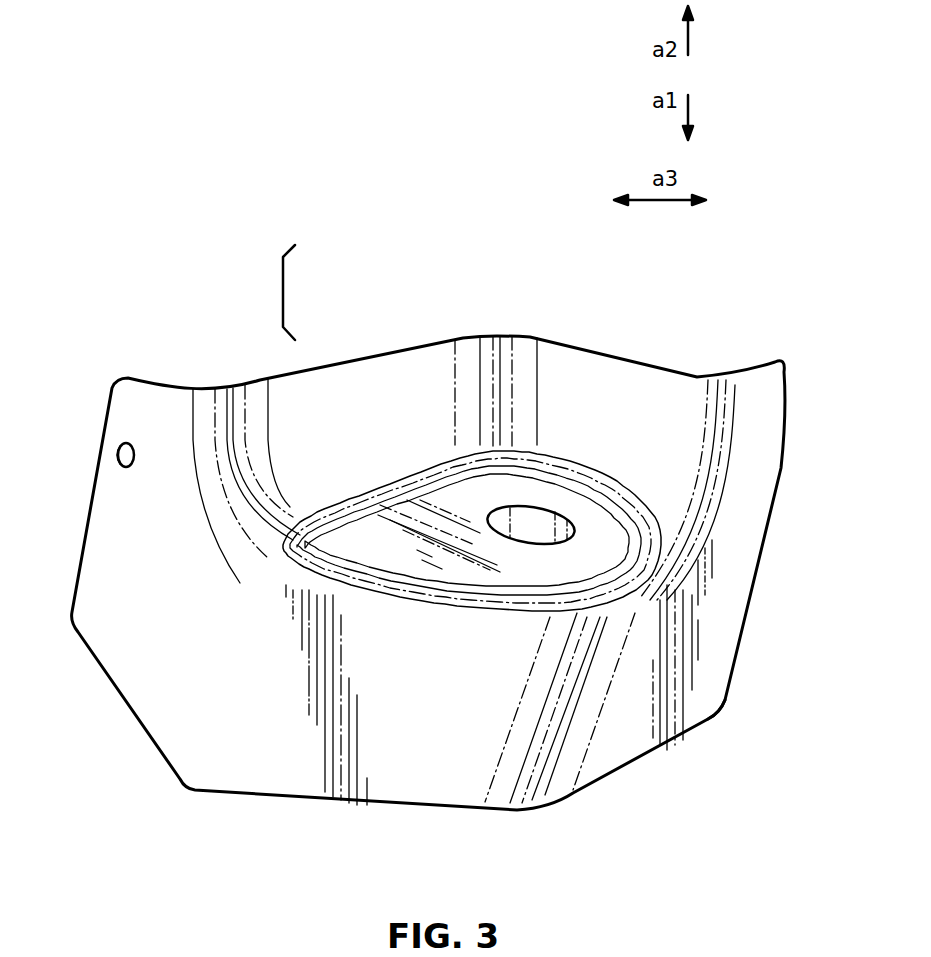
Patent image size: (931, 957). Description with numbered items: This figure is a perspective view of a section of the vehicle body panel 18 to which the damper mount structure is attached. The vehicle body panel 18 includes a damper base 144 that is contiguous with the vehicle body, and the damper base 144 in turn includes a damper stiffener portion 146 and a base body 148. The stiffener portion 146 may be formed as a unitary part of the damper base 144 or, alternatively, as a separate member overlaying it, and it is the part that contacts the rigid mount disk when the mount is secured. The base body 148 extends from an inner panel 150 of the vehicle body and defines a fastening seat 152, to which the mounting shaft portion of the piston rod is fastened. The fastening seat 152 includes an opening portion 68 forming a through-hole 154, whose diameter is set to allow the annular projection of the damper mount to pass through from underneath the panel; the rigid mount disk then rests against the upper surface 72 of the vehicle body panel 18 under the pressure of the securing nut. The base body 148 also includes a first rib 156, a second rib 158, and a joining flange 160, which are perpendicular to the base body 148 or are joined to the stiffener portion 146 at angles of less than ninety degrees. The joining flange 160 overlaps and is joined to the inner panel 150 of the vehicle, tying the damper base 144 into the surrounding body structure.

The vehicle body panel 18 is at (110, 276).
The opening portion 68 is at (560, 518).
The upper surface 72 is at (337, 552).
The damper base 144 is at (283, 292).
The damper stiffener portion 146 is at (377, 488).
The base body 148 is at (577, 388).
The inner panel 150 is at (288, 397).
The fastening seat 152 is at (597, 543).
The through-hole 154 is at (525, 515).
The first rib 156 is at (455, 797).
The second rib 158 is at (720, 697).
The joining flange 160 is at (550, 343).